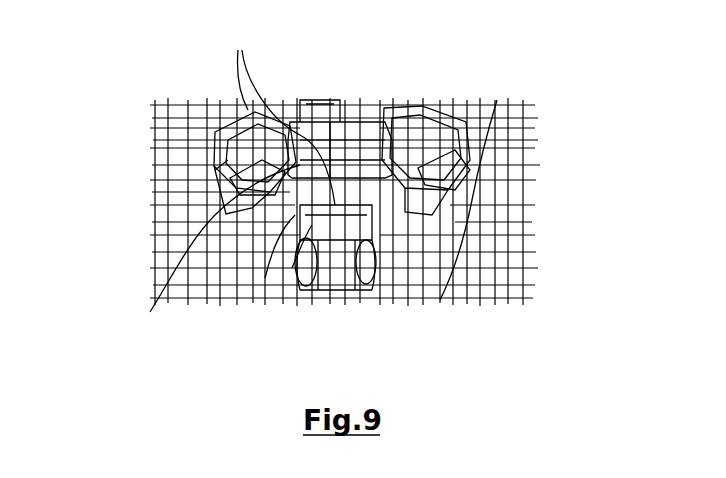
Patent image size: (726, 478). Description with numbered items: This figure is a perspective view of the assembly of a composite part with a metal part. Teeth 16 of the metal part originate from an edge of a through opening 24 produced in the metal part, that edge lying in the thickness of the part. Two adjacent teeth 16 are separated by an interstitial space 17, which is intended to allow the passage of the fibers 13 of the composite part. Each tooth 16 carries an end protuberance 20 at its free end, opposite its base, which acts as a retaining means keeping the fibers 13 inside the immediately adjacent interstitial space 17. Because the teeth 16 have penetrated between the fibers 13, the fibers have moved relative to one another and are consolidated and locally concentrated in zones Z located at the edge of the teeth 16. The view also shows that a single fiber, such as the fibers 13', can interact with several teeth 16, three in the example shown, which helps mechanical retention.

The fibers 13 is at (283, 115).
The fibers 13' is at (258, 288).
The through opening 24 is at (346, 162).
The end protuberance 20 is at (437, 100).
The tooth 16 is at (497, 100).
The interstitial space 17 is at (462, 168).
The zones Z is at (313, 298).